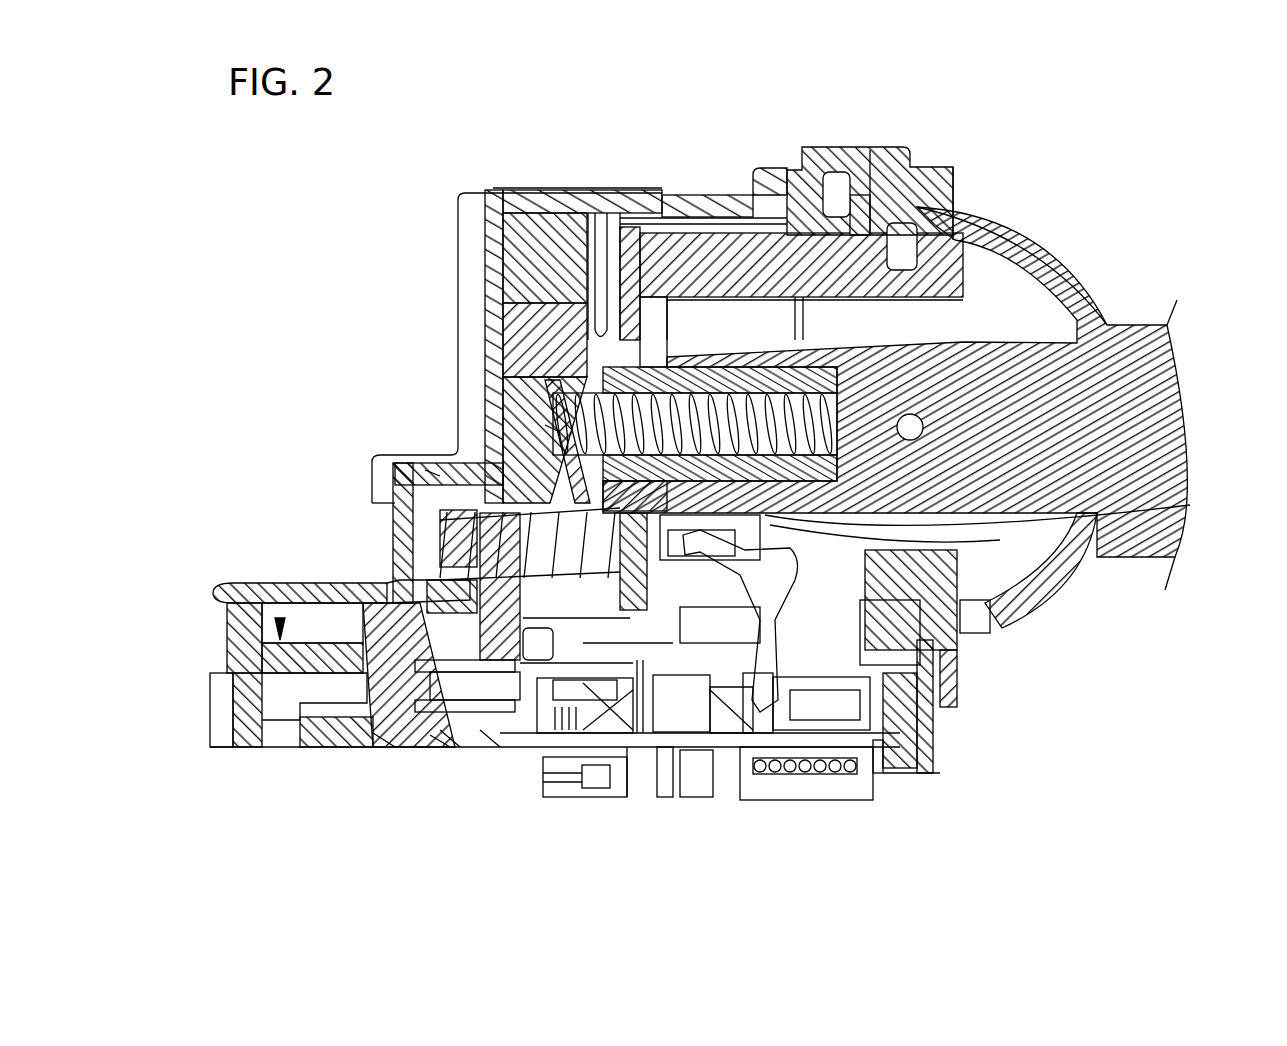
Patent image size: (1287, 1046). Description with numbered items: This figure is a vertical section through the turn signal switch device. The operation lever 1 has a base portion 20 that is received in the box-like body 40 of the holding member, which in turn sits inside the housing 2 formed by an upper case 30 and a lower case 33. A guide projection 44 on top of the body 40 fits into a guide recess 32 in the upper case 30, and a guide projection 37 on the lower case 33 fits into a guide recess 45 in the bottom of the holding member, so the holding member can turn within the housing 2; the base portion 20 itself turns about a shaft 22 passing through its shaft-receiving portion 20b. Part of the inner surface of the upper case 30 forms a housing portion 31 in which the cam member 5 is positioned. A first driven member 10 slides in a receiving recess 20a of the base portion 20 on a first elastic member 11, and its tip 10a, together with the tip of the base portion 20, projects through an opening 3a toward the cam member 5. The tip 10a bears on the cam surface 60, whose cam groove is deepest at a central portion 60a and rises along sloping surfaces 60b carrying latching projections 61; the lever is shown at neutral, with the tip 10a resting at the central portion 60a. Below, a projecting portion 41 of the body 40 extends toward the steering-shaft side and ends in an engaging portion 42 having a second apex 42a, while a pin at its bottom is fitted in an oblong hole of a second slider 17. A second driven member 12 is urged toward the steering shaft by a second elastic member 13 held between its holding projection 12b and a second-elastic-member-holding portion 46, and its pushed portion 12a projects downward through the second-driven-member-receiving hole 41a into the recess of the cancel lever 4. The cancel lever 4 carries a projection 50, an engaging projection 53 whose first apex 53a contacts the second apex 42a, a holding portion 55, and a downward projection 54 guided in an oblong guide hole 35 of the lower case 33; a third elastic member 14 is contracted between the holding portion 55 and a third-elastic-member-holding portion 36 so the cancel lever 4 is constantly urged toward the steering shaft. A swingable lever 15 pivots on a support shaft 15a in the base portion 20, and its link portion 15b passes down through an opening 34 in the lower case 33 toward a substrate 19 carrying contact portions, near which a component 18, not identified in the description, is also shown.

The operation lever 1 is at (1140, 312).
The housing 2 is at (698, 440).
The opening 3a is at (635, 335).
The cancel lever 4 is at (240, 588).
The cam member 5 is at (543, 318).
The first driven member 10 is at (660, 340).
The tip 10a is at (548, 412).
The first elastic member 11 is at (603, 335).
The second driven member 12 is at (405, 518).
The pushed portion 12a is at (523, 740).
The holding projection 12b is at (395, 503).
The second elastic member 13 is at (383, 503).
The third elastic member 14 is at (463, 740).
The swingable lever 15 is at (810, 620).
The support shaft 15a is at (1005, 525).
The link portion 15b is at (757, 723).
The second slider 17 is at (606, 768).
The bearing 18 is at (800, 717).
The substrate 19 is at (660, 740).
The base portion 20 is at (697, 275).
The receiving recess 20a is at (803, 340).
The shaft-receiving portion 20b is at (915, 418).
The shaft 22 is at (923, 197).
The upper case 30 is at (500, 186).
The housing portion 31 is at (503, 295).
The guide recess 32 is at (852, 193).
The lower case 33 is at (937, 748).
The opening 34 is at (900, 703).
The oblong guide hole 35 is at (380, 730).
The third-elastic-member-holding portion 36 is at (490, 740).
The guide projection 37 is at (1000, 606).
The body 40 is at (760, 273).
The projecting portion 41 is at (395, 605).
The second-driven-member-receiving hole 41a is at (445, 548).
The engaging portion 42 is at (283, 612).
The second apex 42a is at (470, 578).
The guide projection 44 is at (828, 193).
The guide recess 45 is at (985, 615).
The second-elastic-member-holding portion 46 is at (650, 750).
The projection 50 is at (232, 640).
The engaging projection 53 is at (453, 740).
The first apex 53a is at (448, 740).
The downward projection 54 is at (413, 737).
The holding portion 55 is at (440, 740).
The cam surface 60 is at (520, 376).
The central portion 60a is at (555, 430).
The sloping surfaces 60b is at (430, 472).
The latching projections 61 is at (515, 343).